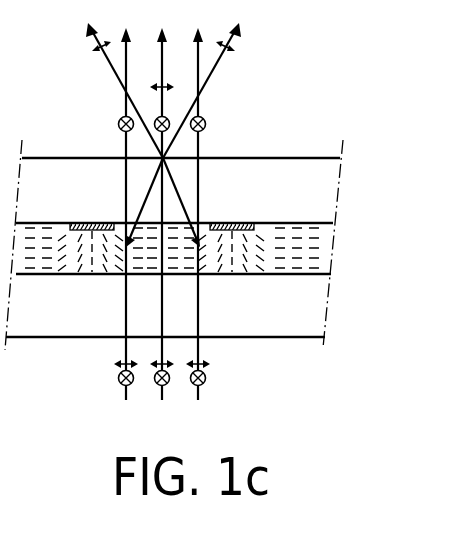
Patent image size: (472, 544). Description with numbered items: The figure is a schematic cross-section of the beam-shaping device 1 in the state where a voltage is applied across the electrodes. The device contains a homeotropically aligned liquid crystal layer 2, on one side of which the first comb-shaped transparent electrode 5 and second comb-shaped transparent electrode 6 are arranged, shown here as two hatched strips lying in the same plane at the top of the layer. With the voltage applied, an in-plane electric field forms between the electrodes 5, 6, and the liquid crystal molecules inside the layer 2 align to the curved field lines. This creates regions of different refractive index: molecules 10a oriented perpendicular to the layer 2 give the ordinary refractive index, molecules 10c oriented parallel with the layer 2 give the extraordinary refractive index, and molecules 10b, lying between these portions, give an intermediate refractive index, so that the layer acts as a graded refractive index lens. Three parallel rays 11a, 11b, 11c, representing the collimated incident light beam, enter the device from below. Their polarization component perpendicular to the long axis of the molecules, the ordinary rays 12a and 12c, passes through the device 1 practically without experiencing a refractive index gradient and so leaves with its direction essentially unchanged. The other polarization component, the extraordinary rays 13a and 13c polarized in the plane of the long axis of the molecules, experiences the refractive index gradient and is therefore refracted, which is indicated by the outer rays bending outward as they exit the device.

The beam-shaping device 1 is at (362, 82).
The liquid crystal layer 2 is at (325, 262).
The first comb-shaped transparent electrode 5 is at (92, 222).
The second comb-shaped transparent electrode 6 is at (232, 222).
The LC molecules oriented perpendicular to the LC layer 10a is at (236, 253).
The intermediately oriented LC molecules 10b is at (118, 246).
The LC molecules oriented parallel with the LC layer 10c is at (169, 238).
The first parallel ray of incident light 11a is at (125, 351).
The second parallel ray of incident light 11b is at (165, 351).
The third parallel ray of incident light 11c is at (200, 351).
The ordinary ray 12a is at (125, 103).
The ordinary ray 12c is at (201, 103).
The extraordinary ray 13a is at (232, 39).
The extraordinary ray 13c is at (96, 39).